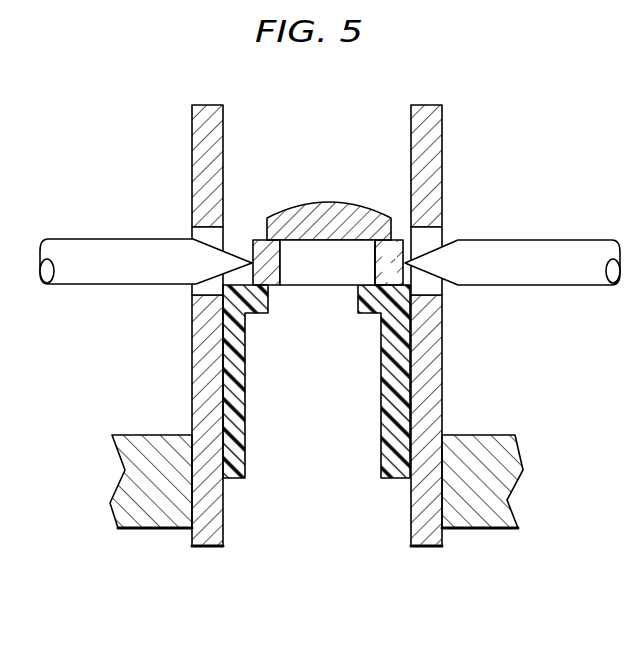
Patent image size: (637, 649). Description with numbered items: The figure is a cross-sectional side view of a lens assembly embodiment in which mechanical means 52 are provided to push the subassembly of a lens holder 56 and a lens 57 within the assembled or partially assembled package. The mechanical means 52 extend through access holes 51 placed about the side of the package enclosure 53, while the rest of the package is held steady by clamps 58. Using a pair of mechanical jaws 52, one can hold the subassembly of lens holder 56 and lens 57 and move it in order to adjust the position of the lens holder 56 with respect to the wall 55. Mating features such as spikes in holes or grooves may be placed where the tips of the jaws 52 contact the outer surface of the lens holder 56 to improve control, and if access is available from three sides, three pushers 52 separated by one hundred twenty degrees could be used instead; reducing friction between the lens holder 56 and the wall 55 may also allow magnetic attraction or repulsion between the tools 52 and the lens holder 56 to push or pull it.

The access holes 51 is at (196, 233).
The mechanical means 52 is at (90, 286).
The package enclosure 53 is at (443, 123).
The wall 55 is at (417, 320).
The lens holder 56 is at (255, 240).
The lens 57 is at (327, 202).
The clamps 58 is at (135, 528).